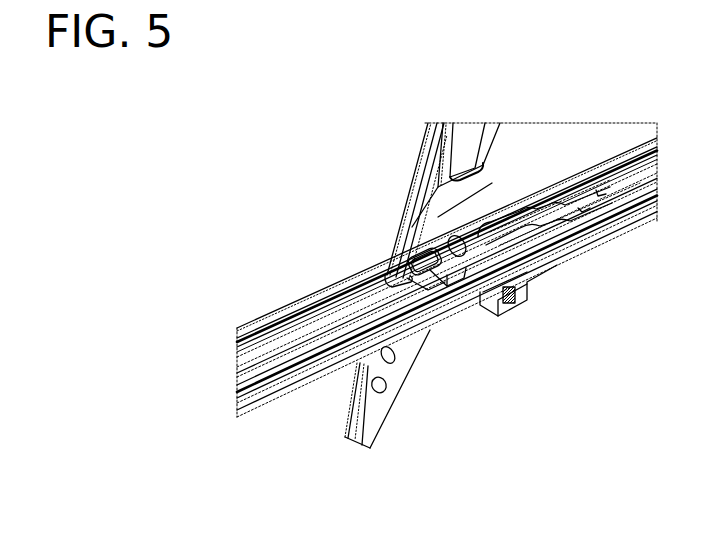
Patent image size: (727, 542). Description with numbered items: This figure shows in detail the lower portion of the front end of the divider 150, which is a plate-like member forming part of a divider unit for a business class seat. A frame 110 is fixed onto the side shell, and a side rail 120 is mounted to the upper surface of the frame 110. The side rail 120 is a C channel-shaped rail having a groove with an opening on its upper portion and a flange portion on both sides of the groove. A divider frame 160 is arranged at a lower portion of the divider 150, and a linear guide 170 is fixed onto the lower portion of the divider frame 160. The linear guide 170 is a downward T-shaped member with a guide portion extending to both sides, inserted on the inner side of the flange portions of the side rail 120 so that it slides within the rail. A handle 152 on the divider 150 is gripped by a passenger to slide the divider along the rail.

The frame 110 is at (305, 377).
The side rail 120 is at (253, 362).
The divider 150 is at (572, 143).
The handle 152 is at (473, 143).
The divider frame 160 is at (443, 253).
The linear guide 170 is at (447, 270).